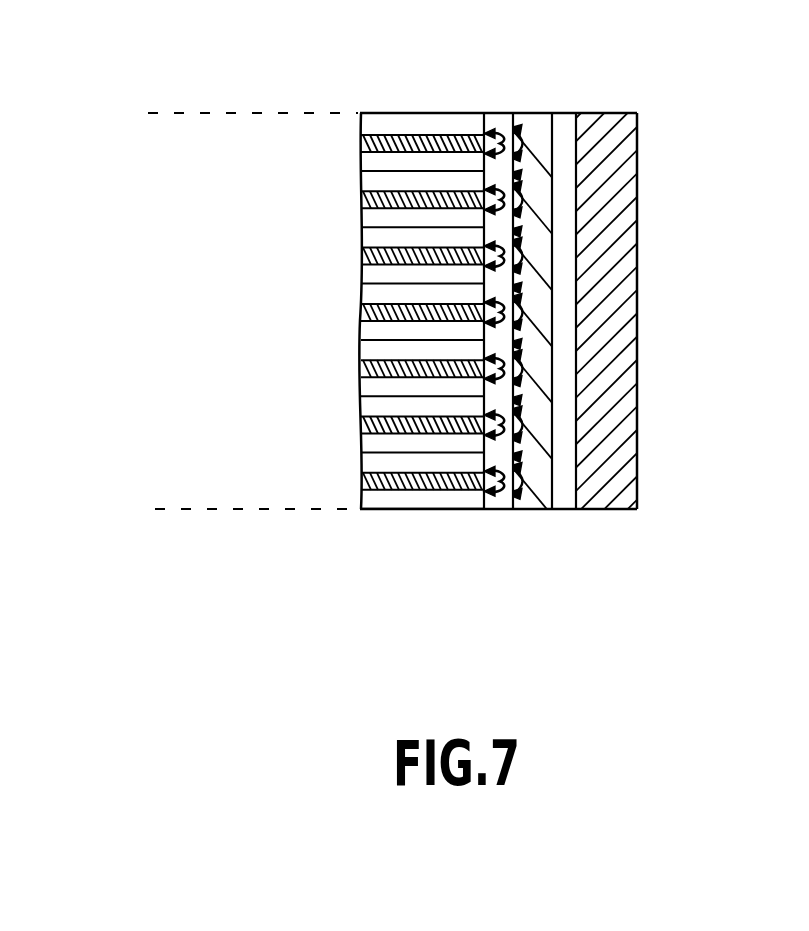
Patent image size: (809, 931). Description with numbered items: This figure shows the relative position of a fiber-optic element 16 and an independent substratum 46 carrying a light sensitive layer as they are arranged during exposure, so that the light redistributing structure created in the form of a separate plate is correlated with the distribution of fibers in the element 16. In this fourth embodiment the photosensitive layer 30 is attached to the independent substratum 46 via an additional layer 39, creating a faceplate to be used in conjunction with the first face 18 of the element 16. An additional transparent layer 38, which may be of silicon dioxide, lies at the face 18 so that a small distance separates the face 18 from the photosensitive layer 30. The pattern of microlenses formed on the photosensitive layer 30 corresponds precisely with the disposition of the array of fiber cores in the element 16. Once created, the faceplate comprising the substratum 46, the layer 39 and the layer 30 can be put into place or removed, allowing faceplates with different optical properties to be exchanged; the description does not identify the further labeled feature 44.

The fiber-optic element 16 is at (431, 311).
The first face 18 is at (476, 126).
The photosensitive layer 30 is at (551, 131).
The additional transparent layer 38 is at (504, 117).
The additional layer 39 is at (563, 448).
The pile fibers 44 is at (515, 516).
The independent substratum 46 is at (621, 273).